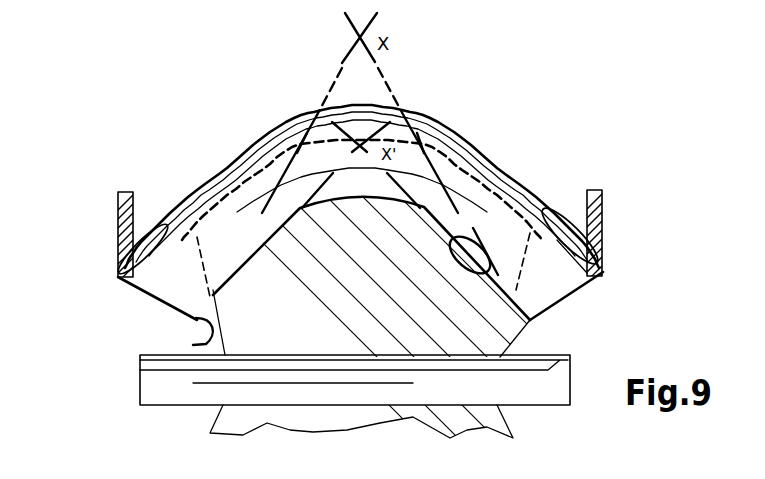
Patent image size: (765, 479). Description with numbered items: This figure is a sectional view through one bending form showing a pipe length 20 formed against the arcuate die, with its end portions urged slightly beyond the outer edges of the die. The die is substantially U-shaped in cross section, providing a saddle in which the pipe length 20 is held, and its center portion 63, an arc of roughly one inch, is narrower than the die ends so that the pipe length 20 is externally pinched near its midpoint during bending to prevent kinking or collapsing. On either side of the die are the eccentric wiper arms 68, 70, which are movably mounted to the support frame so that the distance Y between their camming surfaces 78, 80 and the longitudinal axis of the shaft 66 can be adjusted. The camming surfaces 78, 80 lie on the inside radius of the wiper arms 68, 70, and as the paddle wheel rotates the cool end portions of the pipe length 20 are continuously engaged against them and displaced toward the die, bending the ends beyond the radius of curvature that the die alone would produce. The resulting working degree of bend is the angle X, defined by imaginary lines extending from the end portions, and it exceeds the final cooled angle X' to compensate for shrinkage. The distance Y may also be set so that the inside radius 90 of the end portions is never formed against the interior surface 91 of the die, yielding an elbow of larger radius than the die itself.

The pipe length 20 is at (404, 114).
The center portion 63 is at (357, 197).
The shaft 66 is at (550, 368).
The eccentric wiper arm 68 is at (601, 222).
The eccentric wiper arm 70 is at (120, 238).
The camming surface 78 is at (545, 208).
The camming surface 80 is at (163, 232).
The inside radius 90 is at (450, 240).
The interior surface 91 is at (243, 264).